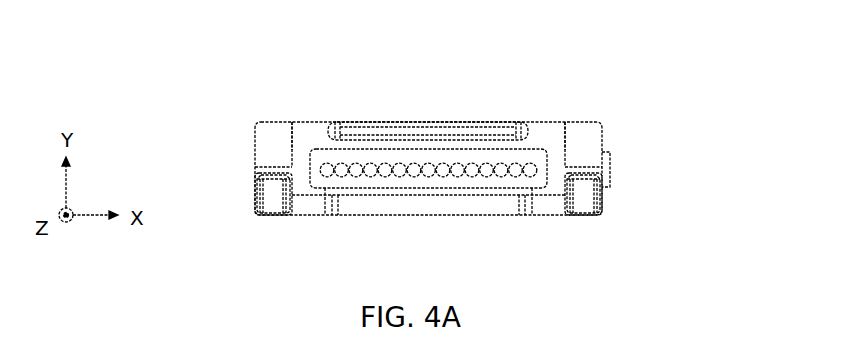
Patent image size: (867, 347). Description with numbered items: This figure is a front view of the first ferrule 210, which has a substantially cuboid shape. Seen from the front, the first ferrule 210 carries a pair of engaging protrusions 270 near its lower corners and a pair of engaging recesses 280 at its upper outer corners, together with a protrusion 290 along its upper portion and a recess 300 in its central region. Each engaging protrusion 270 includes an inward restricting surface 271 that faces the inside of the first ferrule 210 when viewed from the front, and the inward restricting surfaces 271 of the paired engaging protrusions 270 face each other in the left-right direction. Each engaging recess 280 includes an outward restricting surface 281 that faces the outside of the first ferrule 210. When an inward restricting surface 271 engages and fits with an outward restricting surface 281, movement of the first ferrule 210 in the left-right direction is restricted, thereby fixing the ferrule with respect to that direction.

The first ferrule 210 is at (575, 63).
The engaging protrusion 270 is at (260, 194).
The inward restricting surface 271 is at (298, 198).
The engaging recess 280 is at (267, 150).
The outward restricting surface 281 is at (290, 148).
The protrusion 290 is at (410, 131).
The recess 300 is at (412, 205).